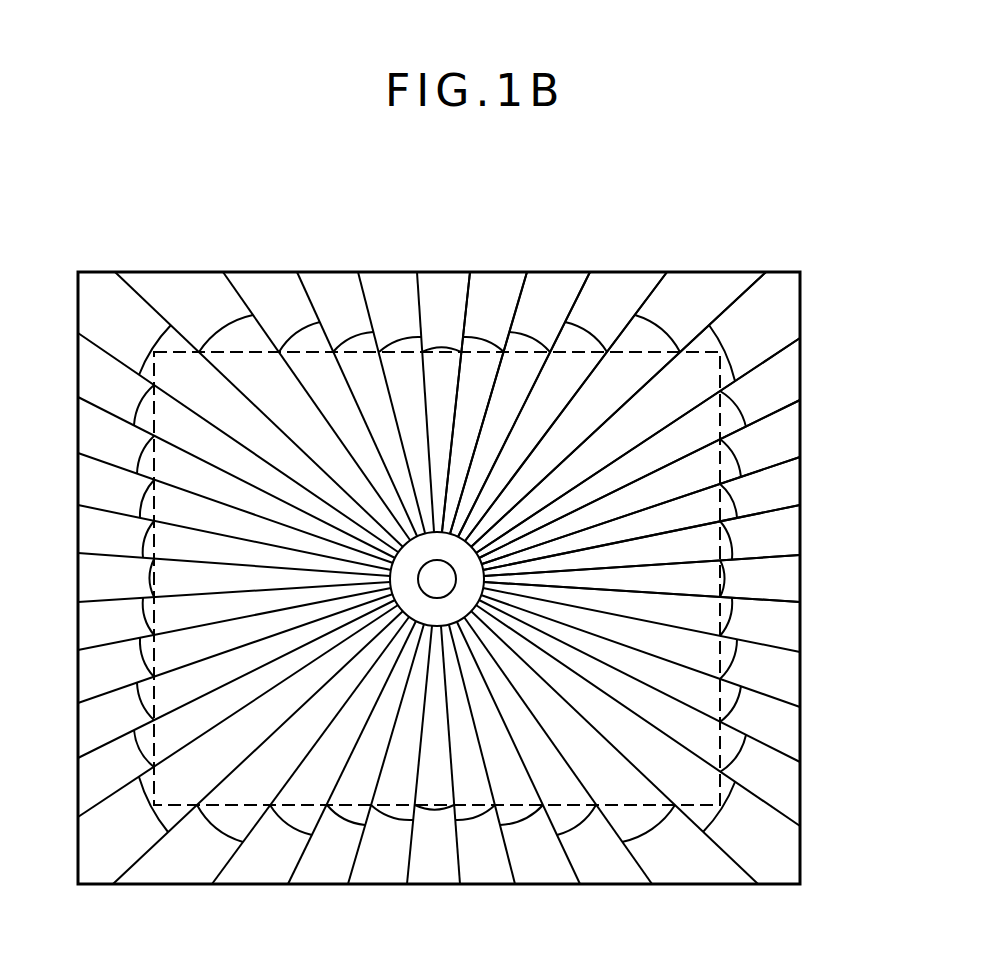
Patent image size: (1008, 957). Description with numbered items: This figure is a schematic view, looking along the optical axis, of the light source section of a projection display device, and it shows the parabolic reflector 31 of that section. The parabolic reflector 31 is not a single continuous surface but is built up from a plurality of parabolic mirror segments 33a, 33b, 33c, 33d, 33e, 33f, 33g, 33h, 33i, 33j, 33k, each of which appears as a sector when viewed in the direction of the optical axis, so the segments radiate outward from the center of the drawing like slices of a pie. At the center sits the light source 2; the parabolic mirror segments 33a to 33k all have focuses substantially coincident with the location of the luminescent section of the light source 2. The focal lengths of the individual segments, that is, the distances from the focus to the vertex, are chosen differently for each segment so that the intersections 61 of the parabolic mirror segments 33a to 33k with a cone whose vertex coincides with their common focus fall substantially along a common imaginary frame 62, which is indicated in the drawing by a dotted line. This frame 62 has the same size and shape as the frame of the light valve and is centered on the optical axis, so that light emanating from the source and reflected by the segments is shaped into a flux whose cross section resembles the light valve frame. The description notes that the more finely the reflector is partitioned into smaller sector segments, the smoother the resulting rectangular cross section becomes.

The light source 2 is at (443, 617).
The parabolic reflector 31 is at (621, 945).
The parabolic mirror segment 33a is at (437, 270).
The parabolic mirror segment 33b is at (500, 270).
The parabolic mirror segment 33c is at (567, 270).
The parabolic mirror segment 33d is at (635, 270).
The parabolic mirror segment 33e is at (715, 270).
The parabolic mirror segment 33f is at (802, 273).
The parabolic mirror segment 33g is at (796, 366).
The parabolic mirror segment 33h is at (796, 421).
The parabolic mirror segment 33i is at (796, 476).
The parabolic mirror segment 33j is at (796, 529).
The parabolic mirror segment 33k is at (796, 586).
The intersections 61 is at (740, 750).
The common imaginary frame 62 is at (665, 807).